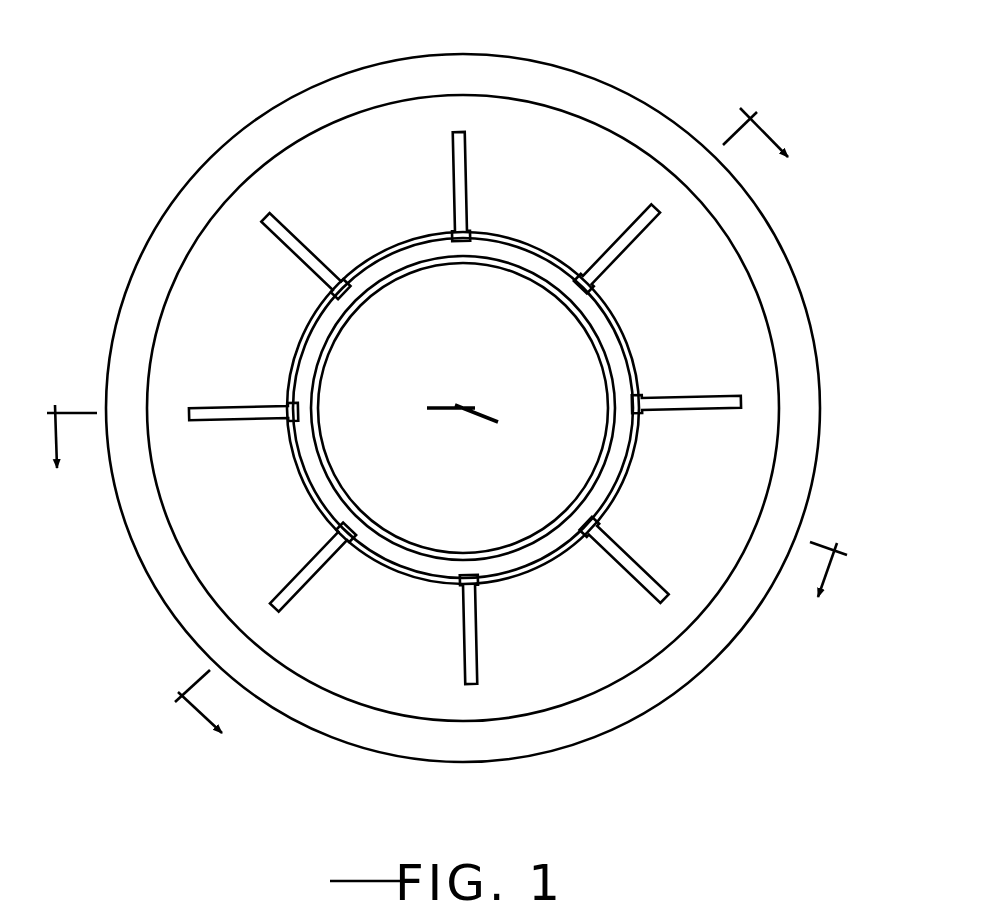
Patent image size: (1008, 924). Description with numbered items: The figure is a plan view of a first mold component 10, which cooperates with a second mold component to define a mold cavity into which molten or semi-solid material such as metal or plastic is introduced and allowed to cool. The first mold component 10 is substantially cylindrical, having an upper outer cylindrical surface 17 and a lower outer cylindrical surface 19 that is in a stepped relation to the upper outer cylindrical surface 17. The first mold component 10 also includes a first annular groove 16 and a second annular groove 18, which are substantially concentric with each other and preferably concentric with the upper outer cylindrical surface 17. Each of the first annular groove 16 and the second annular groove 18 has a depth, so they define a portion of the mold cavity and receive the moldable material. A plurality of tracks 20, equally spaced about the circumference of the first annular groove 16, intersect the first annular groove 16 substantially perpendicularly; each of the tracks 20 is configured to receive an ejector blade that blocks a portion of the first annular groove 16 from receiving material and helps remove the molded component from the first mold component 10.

The first mold component 10 is at (328, 52).
The first annular groove 16 is at (636, 350).
The upper outer cylindrical surface 17 is at (662, 657).
The second annular groove 18 is at (403, 270).
The lower outer cylindrical surface 19 is at (565, 750).
The tracks 20 is at (467, 143).